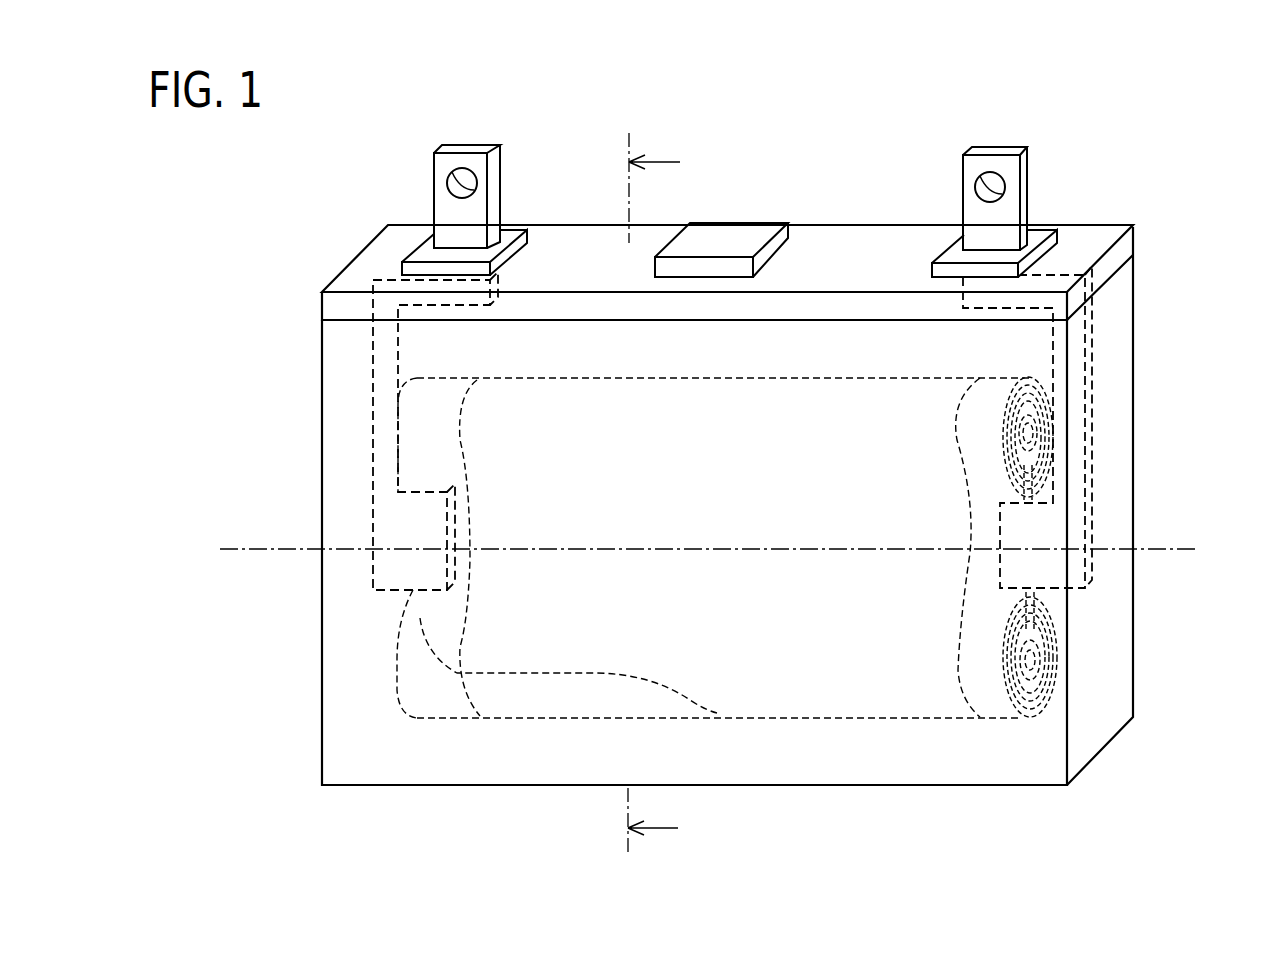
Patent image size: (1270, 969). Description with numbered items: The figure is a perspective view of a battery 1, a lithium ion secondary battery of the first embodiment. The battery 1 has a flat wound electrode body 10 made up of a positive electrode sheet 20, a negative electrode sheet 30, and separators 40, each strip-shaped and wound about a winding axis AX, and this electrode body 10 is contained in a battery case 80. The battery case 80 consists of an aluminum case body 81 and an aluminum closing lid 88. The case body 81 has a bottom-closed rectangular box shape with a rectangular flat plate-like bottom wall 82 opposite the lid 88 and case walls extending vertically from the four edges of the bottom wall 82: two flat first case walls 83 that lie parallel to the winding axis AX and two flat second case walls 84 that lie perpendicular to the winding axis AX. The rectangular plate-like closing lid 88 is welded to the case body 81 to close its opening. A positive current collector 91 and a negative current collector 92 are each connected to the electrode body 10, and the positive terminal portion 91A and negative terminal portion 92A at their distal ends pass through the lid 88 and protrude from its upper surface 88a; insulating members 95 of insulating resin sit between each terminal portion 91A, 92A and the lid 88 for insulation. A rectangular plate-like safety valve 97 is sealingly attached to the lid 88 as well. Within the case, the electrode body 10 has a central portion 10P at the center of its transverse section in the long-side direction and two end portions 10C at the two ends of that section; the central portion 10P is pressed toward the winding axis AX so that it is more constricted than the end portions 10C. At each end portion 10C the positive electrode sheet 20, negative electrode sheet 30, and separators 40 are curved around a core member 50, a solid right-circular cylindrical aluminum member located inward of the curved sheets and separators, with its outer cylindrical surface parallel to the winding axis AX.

The battery 1 is at (1172, 192).
The electrode body 10 is at (722, 826).
The end portions 10C is at (527, 417).
The central portion 10P is at (567, 507).
The positive electrode sheet 20 is at (717, 713).
The negative electrode sheet 30 is at (990, 595).
The separators 40 is at (730, 620).
The core member 50 is at (1033, 437).
The battery case 80 is at (1226, 247).
The case body 81 is at (1115, 328).
The bottom wall 82 is at (1122, 752).
The first case walls 83 is at (1112, 585).
The second case walls 84 is at (320, 742).
The closing lid 88 is at (1120, 247).
The upper surface 88a is at (550, 250).
The positive current collector 91 is at (385, 465).
The positive terminal portion 91A is at (435, 152).
The negative current collector 92 is at (1075, 487).
The negative terminal portion 92A is at (1010, 163).
The insulating members 95 is at (420, 250).
The safety valve 97 is at (738, 232).
The winding axis AX is at (1185, 550).